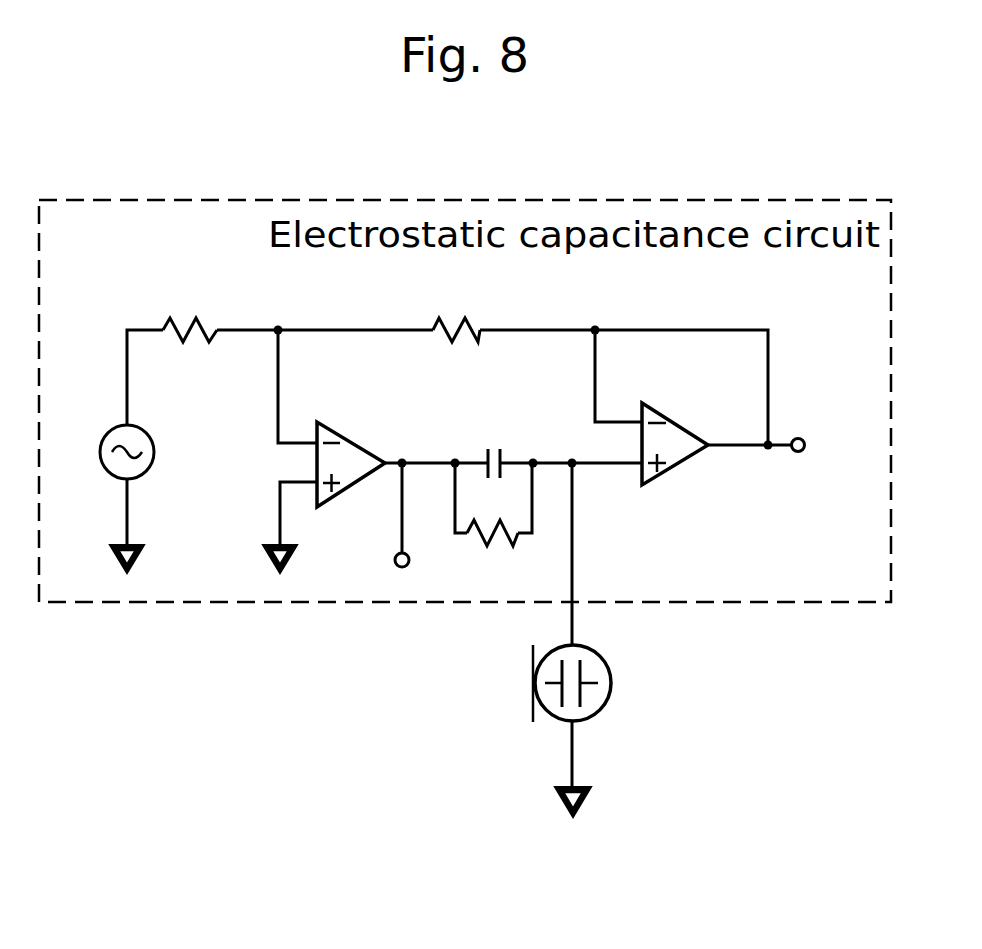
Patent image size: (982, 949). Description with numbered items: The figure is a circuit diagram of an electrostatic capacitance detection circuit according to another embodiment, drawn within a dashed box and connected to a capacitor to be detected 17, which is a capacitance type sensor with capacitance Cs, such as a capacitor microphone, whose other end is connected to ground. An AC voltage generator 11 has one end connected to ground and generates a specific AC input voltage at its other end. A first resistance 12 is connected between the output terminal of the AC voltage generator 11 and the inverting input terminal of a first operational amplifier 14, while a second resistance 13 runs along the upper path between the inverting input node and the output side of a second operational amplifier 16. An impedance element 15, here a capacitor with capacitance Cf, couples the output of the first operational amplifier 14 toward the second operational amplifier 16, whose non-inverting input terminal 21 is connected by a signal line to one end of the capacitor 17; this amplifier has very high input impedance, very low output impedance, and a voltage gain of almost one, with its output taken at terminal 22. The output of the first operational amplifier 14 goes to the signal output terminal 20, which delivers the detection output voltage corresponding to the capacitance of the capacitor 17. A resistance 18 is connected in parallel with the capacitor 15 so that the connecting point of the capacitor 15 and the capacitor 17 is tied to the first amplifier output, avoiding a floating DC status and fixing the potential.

The AC voltage generator 11 is at (117, 433).
The resistance (R1) 12 is at (210, 340).
The resistance (R2) 13 is at (450, 344).
The first operational amplifier 14 is at (332, 424).
The impedance element 15 is at (504, 444).
The second operational amplifier 16 is at (666, 418).
The capacitor to be detected 17 is at (608, 668).
The resistance 18 is at (490, 546).
The signal output terminal 20 is at (393, 556).
The non-inverting input terminal 21 is at (618, 466).
The output terminal V2 22 is at (804, 438).